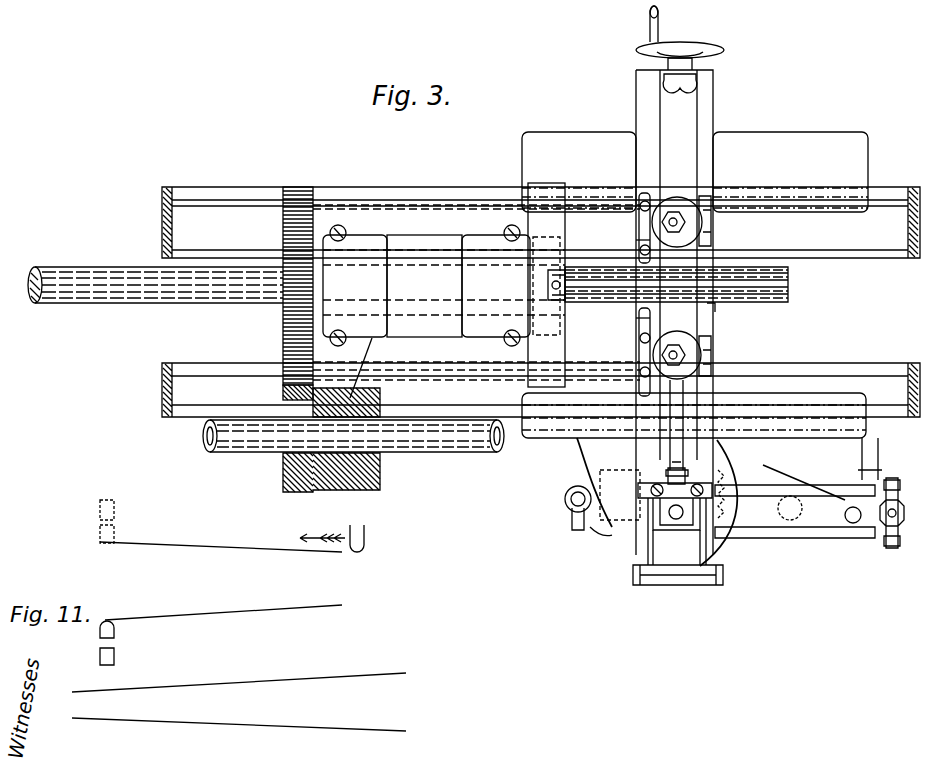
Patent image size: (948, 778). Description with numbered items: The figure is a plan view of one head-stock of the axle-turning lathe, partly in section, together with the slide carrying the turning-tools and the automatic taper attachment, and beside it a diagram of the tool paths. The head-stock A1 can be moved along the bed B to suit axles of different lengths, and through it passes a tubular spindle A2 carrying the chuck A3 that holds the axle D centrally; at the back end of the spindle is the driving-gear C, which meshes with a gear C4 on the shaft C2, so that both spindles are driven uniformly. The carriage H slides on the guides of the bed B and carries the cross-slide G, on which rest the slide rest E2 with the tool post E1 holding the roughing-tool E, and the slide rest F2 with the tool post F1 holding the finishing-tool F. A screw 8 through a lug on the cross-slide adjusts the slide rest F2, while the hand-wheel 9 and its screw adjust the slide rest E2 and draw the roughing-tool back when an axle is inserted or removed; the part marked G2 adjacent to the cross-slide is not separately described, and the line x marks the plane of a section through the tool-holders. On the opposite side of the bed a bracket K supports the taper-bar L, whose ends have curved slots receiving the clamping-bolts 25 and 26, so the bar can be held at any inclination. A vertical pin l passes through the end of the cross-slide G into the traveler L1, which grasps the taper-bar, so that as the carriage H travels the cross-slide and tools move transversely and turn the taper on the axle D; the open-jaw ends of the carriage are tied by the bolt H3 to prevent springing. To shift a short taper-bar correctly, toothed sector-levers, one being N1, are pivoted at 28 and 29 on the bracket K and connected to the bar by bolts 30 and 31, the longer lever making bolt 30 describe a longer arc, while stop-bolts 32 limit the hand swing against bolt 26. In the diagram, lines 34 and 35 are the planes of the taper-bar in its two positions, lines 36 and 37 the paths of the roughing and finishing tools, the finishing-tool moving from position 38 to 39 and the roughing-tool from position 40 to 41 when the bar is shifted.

In FIG. 3, the screw 8 is at (668, 473).
In FIG. 3, the hand-wheel 9 is at (700, 46).
In FIG. 3, the clamping-bolt 25 is at (565, 504).
In FIG. 3, the clamping-bolt 26 is at (904, 505).
In FIG. 3, the pivot 28 is at (648, 505).
In FIG. 3, the pivot 29 is at (790, 520).
In FIG. 3, the bolt 30 is at (853, 524).
In FIG. 3, the bolt 31 is at (592, 532).
In FIG. 3, the stop-bolt 32 is at (895, 478).
In FIG. 11, the line 34 is at (239, 679).
In FIG. 11, the line 35 is at (239, 718).
In FIG. 11, the line 36 is at (221, 541).
In FIG. 11, the line 37 is at (223, 608).
In FIG. 11, the position 38 is at (94, 656).
In FIG. 11, the position 39 is at (117, 629).
In FIG. 11, the position 40 is at (92, 534).
In FIG. 11, the position 41 is at (93, 510).
In FIG. 3, the head-stock A1 is at (430, 234).
In FIG. 3, the tubular spindle A2 is at (318, 238).
In FIG. 3, the chuck A3 is at (546, 285).
In FIG. 3, the bed B is at (541, 302).
In FIG. 3, the driving-gear C is at (298, 186).
In FIG. 3, the shaft C2 is at (240, 450).
In FIG. 3, the gear C4 is at (283, 478).
In FIG. 3, the axle D is at (415, 273).
In FIG. 3, the roughing-tool E is at (640, 240).
In FIG. 11, the roughing-tool E is at (340, 538).
In FIG. 3, the tool post E1 is at (675, 228).
In FIG. 3, the slide rest E2 is at (674, 306).
In FIG. 3, the finishing-tool F is at (640, 316).
In FIG. 11, the finishing-tool F is at (124, 655).
In FIG. 3, the tool post F1 is at (675, 352).
In FIG. 3, the slide rest F2 is at (665, 432).
In FIG. 3, the cross-slide G is at (715, 305).
In FIG. 3, the guide pin G2 is at (683, 512).
In FIG. 3, the carriage H is at (695, 349).
In FIG. 3, the bolt H3 is at (720, 585).
In FIG. 3, the bracket K is at (880, 443).
In FIG. 3, the taper-bar L is at (808, 495).
In FIG. 3, the traveler L1 is at (672, 574).
In FIG. 3, the sector-lever N1 is at (812, 530).
In FIG. 3, the vertical pin l is at (678, 530).
In FIG. 3, the section line x is at (680, 42).